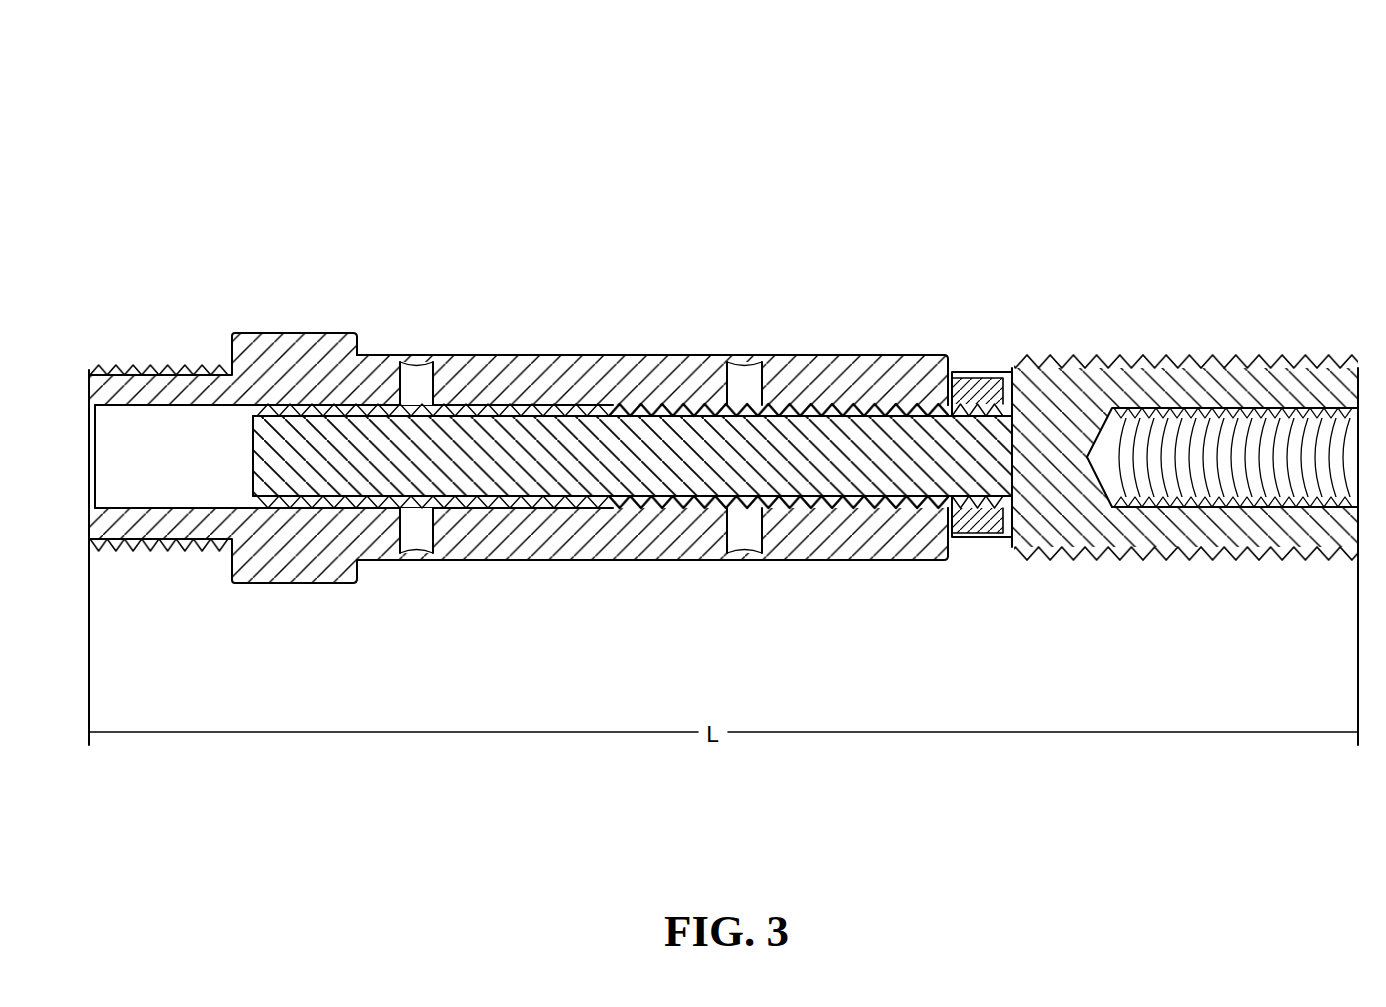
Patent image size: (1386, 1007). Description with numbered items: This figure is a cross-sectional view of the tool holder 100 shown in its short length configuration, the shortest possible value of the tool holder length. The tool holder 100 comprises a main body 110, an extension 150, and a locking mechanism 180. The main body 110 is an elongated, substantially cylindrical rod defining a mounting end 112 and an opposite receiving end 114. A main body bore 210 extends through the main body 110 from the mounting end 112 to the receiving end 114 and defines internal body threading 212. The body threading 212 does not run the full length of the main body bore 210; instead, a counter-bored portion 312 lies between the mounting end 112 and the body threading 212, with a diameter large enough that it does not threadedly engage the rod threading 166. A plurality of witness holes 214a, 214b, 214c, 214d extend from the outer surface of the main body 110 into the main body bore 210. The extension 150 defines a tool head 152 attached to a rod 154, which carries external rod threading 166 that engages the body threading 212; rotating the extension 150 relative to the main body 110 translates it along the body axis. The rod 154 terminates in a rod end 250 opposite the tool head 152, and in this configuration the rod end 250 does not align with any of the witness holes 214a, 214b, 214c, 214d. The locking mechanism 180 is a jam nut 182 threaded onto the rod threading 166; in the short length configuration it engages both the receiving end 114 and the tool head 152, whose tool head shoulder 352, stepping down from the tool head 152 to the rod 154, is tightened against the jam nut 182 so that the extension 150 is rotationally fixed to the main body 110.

The tool holder 100 is at (678, 92).
The main body 110 is at (550, 368).
The mounting end 112 is at (80, 362).
The receiving end 114 is at (953, 357).
The extension 150 is at (1203, 527).
The tool head 152 is at (1200, 372).
The rod 154 is at (663, 470).
The rod threading 166 is at (540, 507).
The locking mechanism 180 is at (976, 378).
The jam nut 182 is at (998, 378).
The main body bore 210 is at (181, 424).
The body threading 212 is at (858, 490).
The witness hole 214a is at (413, 372).
The witness hole 214b is at (748, 372).
The witness hole 214c is at (415, 538).
The witness hole 214d is at (743, 530).
The rod end 250 is at (247, 462).
The counter-bored portion 312 is at (160, 488).
The tool head shoulder 352 is at (1010, 537).